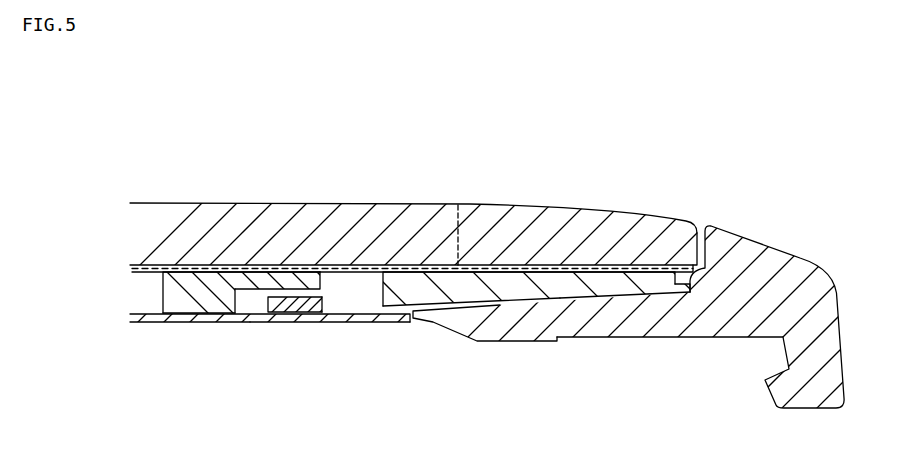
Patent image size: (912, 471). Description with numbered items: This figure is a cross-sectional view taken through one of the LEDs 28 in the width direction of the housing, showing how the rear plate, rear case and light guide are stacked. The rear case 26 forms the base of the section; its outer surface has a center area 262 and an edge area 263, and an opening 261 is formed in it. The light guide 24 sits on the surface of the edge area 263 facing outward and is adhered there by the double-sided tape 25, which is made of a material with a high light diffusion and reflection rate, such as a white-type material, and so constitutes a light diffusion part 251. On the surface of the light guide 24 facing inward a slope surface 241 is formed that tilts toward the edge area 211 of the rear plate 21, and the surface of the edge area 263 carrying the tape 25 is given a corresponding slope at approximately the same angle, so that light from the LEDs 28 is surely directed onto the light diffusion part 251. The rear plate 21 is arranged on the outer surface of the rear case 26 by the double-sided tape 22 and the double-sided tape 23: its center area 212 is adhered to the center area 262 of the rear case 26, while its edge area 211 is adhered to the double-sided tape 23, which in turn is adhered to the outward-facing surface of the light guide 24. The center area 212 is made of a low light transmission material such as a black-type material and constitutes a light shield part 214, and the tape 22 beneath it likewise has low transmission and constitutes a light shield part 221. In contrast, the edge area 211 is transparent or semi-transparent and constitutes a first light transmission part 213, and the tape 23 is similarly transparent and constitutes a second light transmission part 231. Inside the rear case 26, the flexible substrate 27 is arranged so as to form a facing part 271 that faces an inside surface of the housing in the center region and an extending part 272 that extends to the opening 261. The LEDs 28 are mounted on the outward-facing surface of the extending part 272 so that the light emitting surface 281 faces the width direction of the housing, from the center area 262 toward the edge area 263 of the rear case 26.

The rear plate 21 is at (451, 182).
The edge area of the rear plate 211 is at (413, 162).
The center area of the rear plate 212 is at (311, 182).
The first light transmission part 213 is at (530, 192).
The light shield part 214 is at (313, 191).
The double-sided tape 22 is at (412, 207).
The light shield part 221 is at (423, 253).
The double-sided tape 23 is at (554, 201).
The second light transmission part 231 is at (540, 221).
The light guide 24 is at (492, 318).
The slope surface 241 is at (691, 191).
The double-sided tape 25 is at (646, 364).
The light diffusion part 251 is at (630, 316).
The rear case 26 is at (483, 262).
The opening 261 is at (355, 271).
The center area of the rear case 262 is at (208, 333).
The edge area of the rear case 263 is at (583, 320).
The flexible substrate 27 is at (260, 380).
The facing part 271 is at (163, 333).
The extending part 272 is at (365, 336).
The LED 28 is at (296, 366).
The light emitting surface 281 is at (332, 308).